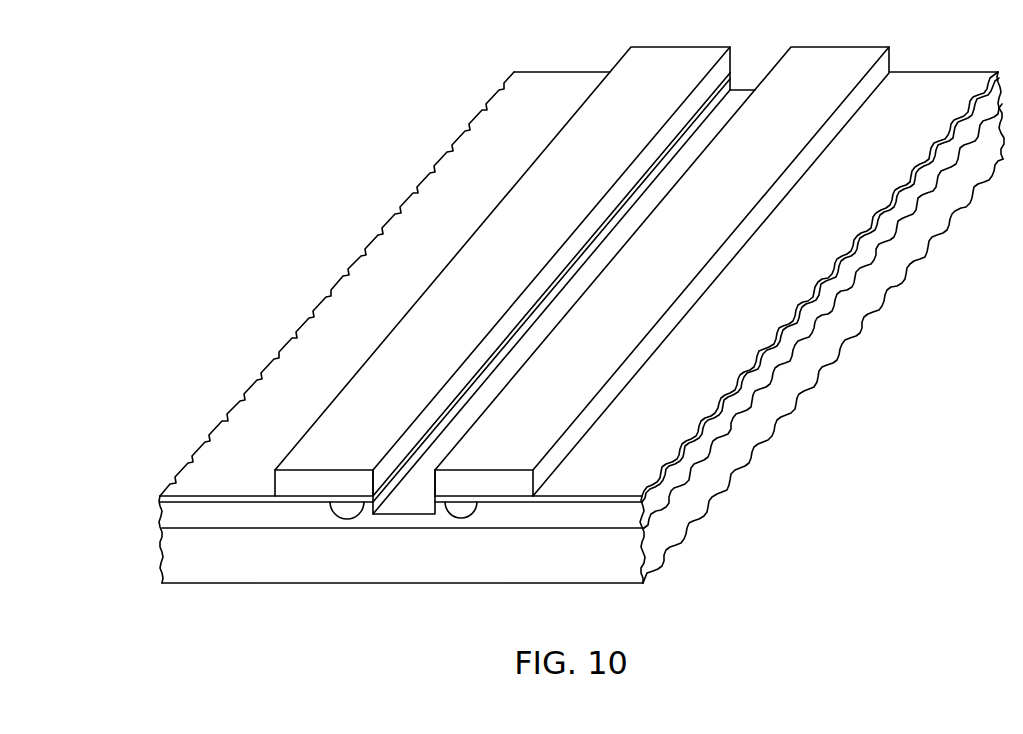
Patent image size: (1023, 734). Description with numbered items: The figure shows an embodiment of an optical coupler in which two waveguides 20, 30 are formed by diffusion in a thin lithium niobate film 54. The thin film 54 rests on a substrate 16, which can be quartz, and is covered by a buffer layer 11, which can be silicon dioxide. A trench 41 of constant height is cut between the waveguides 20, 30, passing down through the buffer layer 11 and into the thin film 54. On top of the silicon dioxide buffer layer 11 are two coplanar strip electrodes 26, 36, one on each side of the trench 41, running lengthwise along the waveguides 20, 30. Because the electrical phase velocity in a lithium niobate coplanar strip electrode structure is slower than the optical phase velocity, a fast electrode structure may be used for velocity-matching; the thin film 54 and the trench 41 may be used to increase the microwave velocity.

The buffer layer 11 is at (162, 497).
The thin lithium niobate film 54 is at (166, 515).
The substrate 16 is at (166, 557).
The coplanar strip electrode 26 is at (668, 66).
The coplanar strip electrode 36 is at (826, 66).
The trench 41 is at (415, 497).
The waveguide 20 is at (334, 512).
The waveguide 30 is at (452, 512).